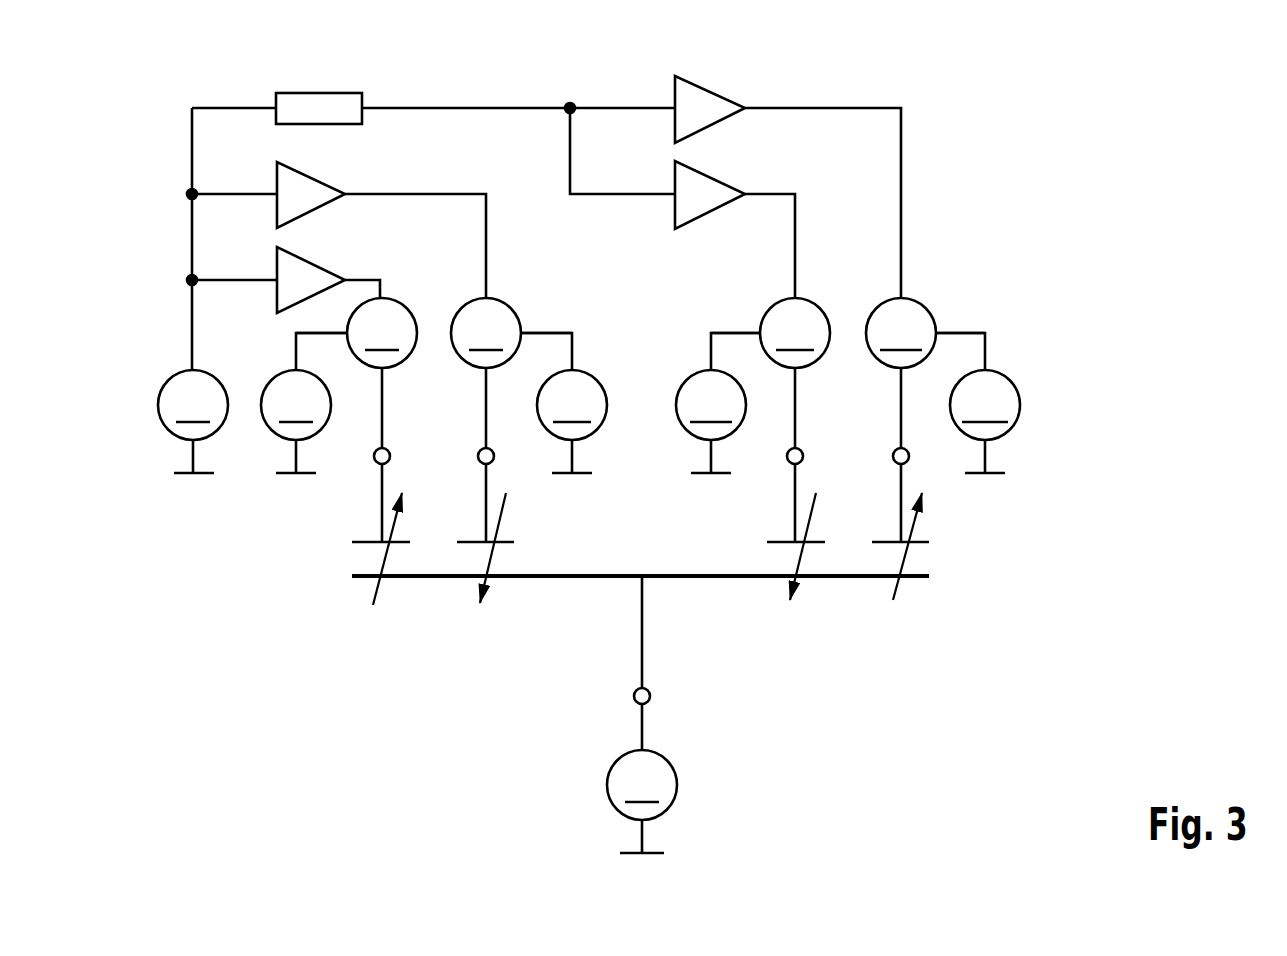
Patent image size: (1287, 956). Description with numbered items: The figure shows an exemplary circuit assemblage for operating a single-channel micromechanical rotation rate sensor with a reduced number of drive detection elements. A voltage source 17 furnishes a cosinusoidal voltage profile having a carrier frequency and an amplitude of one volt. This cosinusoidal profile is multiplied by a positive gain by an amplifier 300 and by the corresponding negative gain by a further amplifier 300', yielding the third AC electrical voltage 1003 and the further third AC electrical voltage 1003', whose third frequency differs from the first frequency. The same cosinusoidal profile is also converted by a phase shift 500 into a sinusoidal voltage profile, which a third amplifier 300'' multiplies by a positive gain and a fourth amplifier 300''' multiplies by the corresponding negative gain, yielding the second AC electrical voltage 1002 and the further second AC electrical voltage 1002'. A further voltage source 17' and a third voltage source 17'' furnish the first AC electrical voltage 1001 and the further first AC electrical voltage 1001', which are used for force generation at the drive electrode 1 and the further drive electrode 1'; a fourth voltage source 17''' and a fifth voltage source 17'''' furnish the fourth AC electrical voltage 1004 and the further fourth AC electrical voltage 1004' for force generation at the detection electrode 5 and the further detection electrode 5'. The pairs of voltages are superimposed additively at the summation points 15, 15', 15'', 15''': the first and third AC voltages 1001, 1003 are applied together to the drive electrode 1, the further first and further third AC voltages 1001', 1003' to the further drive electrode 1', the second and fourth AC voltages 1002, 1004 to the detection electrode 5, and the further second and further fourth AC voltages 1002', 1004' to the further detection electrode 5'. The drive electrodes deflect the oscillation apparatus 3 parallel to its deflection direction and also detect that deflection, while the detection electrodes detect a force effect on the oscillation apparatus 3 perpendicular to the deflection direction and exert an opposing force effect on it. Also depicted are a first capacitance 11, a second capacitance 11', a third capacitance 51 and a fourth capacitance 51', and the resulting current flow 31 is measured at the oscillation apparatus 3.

The phase shift 500 is at (318, 93).
The amplifier 300 is at (331, 270).
The further amplifier 300' is at (381, 220).
The third amplifier 300'' is at (735, 219).
The fourth amplifier 300''' is at (788, 175).
The first AC electrical voltage 1001 is at (277, 331).
The further first AC electrical voltage 1001' is at (550, 301).
The second AC electrical voltage 1002 is at (824, 177).
The further second AC electrical voltage 1002' is at (875, 77).
The third AC electrical voltage 1003 is at (408, 264).
The further third AC electrical voltage 1003' is at (443, 163).
The fourth AC electrical voltage 1004 is at (737, 302).
The further fourth AC electrical voltage 1004' is at (965, 302).
The summation point 15 is at (382, 373).
The summation point 15' is at (486, 373).
The summation point 15'' is at (795, 373).
The summation point 15''' is at (901, 373).
The voltage source 17 is at (193, 421).
The further voltage source 17' is at (304, 403).
The third voltage source 17'' is at (564, 403).
The fourth voltage source 17''' is at (718, 403).
The fifth voltage source 17'''' is at (978, 403).
The drive electrode 1 is at (373, 495).
The further drive electrode 1' is at (469, 492).
The detection electrode 5 is at (808, 492).
The further detection electrode 5' is at (912, 495).
The first capacitance 11 is at (380, 606).
The second capacitance 11' is at (485, 606).
The third capacitance 51 is at (795, 606).
The fourth capacitance 51' is at (901, 606).
The oscillation apparatus 3 is at (633, 697).
The current flow 31 is at (642, 801).